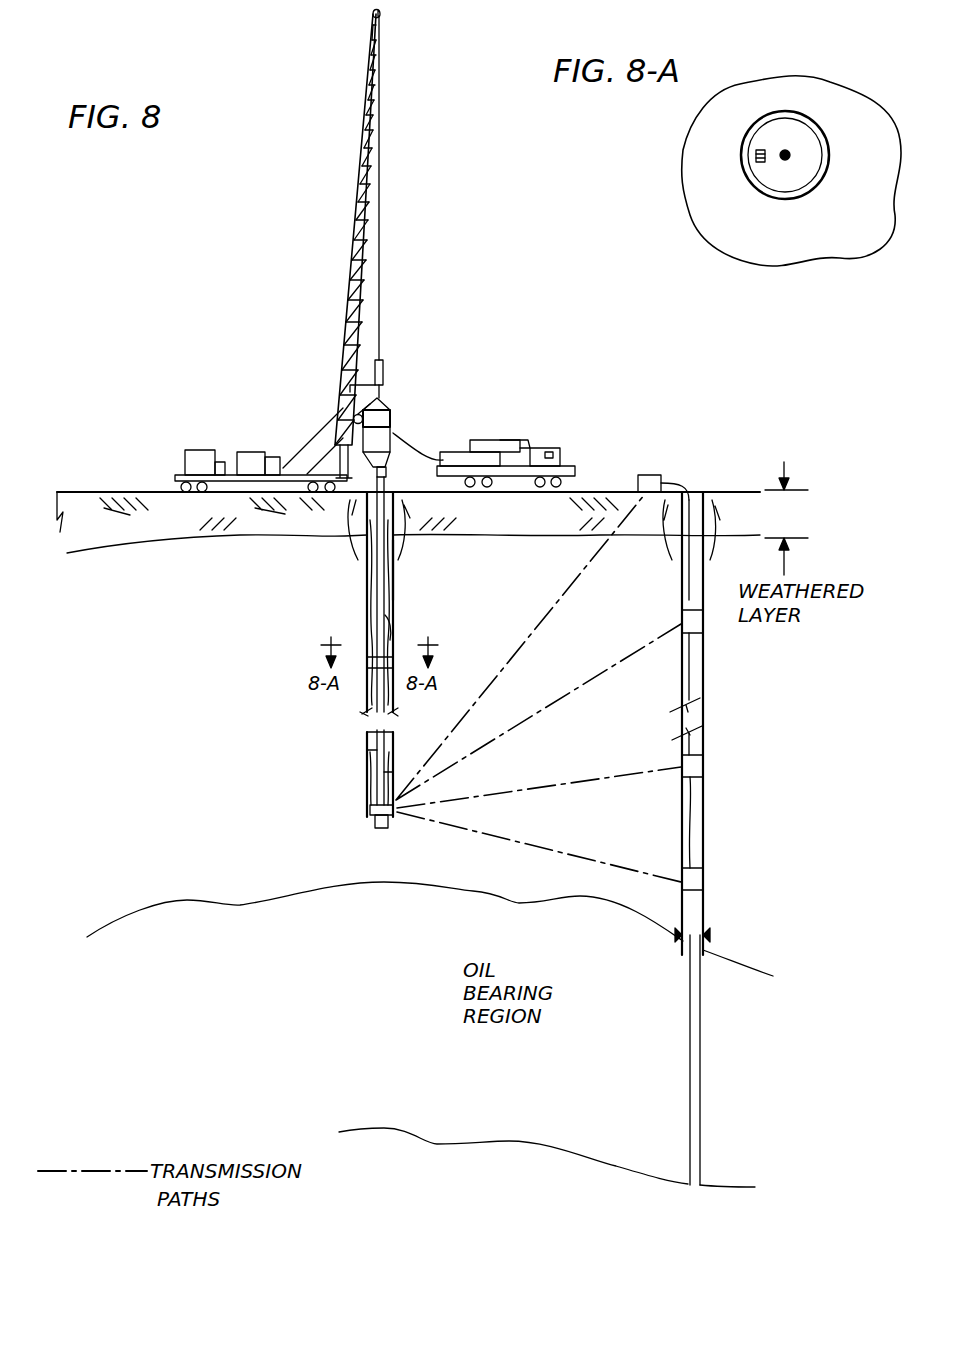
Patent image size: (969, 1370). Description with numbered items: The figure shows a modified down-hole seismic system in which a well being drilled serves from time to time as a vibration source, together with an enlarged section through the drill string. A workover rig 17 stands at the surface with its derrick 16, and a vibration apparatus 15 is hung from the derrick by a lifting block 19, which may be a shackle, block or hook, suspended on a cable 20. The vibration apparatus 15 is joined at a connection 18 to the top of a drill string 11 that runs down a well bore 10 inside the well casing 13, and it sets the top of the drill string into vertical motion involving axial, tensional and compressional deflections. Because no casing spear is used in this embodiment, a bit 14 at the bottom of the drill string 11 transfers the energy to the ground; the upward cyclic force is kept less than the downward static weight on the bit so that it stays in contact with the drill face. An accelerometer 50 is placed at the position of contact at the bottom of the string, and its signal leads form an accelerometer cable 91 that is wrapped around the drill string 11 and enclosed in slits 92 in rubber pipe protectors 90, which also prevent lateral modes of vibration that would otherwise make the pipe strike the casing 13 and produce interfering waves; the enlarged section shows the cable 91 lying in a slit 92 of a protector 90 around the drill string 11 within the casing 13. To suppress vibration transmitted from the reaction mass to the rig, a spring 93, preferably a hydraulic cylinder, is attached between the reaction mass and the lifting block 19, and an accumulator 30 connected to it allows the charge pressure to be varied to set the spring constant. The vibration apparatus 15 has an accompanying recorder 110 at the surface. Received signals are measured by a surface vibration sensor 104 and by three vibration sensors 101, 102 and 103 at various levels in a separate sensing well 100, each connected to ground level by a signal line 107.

In FIG. 8, the derrick 16 is at (356, 184).
In FIG. 8, the cable 20 is at (380, 222).
In FIG. 8, the spring 93 is at (383, 366).
In FIG. 8, the accumulator 30 is at (354, 415).
In FIG. 8, the lifting block 19 is at (383, 407).
In FIG. 8, the vibration apparatus 15 is at (398, 413).
In FIG. 8, the connection 18 is at (387, 473).
In FIG. 8, the workover rig 17 is at (273, 450).
In FIG. 8, the recorder 110 is at (540, 448).
In FIG. 8, the vibration sensor 104 is at (651, 475).
In FIG. 8, the well bore 10 is at (394, 533).
In FIG. 8, the well casing 13 is at (395, 580).
In FIG. 8-A, the well casing 13 is at (820, 132).
In FIG. 8, the drill string 11 is at (378, 603).
In FIG. 8-A, the drill string 11 is at (786, 150).
In FIG. 8, the accelerometer cable 91 is at (398, 633).
In FIG. 8-A, the accelerometer cable 91 is at (756, 154).
In FIG. 8, the rubber pipe protectors 90 is at (395, 704).
In FIG. 8-A, the rubber pipe protectors 90 is at (808, 172).
In FIG. 8, the bit 14 is at (370, 808).
In FIG. 8, the accelerometer 50 is at (376, 828).
In FIG. 8, the vibration sensor 101 is at (682, 622).
In FIG. 8, the signal line 107 is at (700, 708).
In FIG. 8, the vibration sensor 102 is at (700, 765).
In FIG. 8, the sensing well 100 is at (703, 832).
In FIG. 8, the vibration sensor 103 is at (703, 880).
In FIG. 8-A, the slits 92 is at (762, 163).